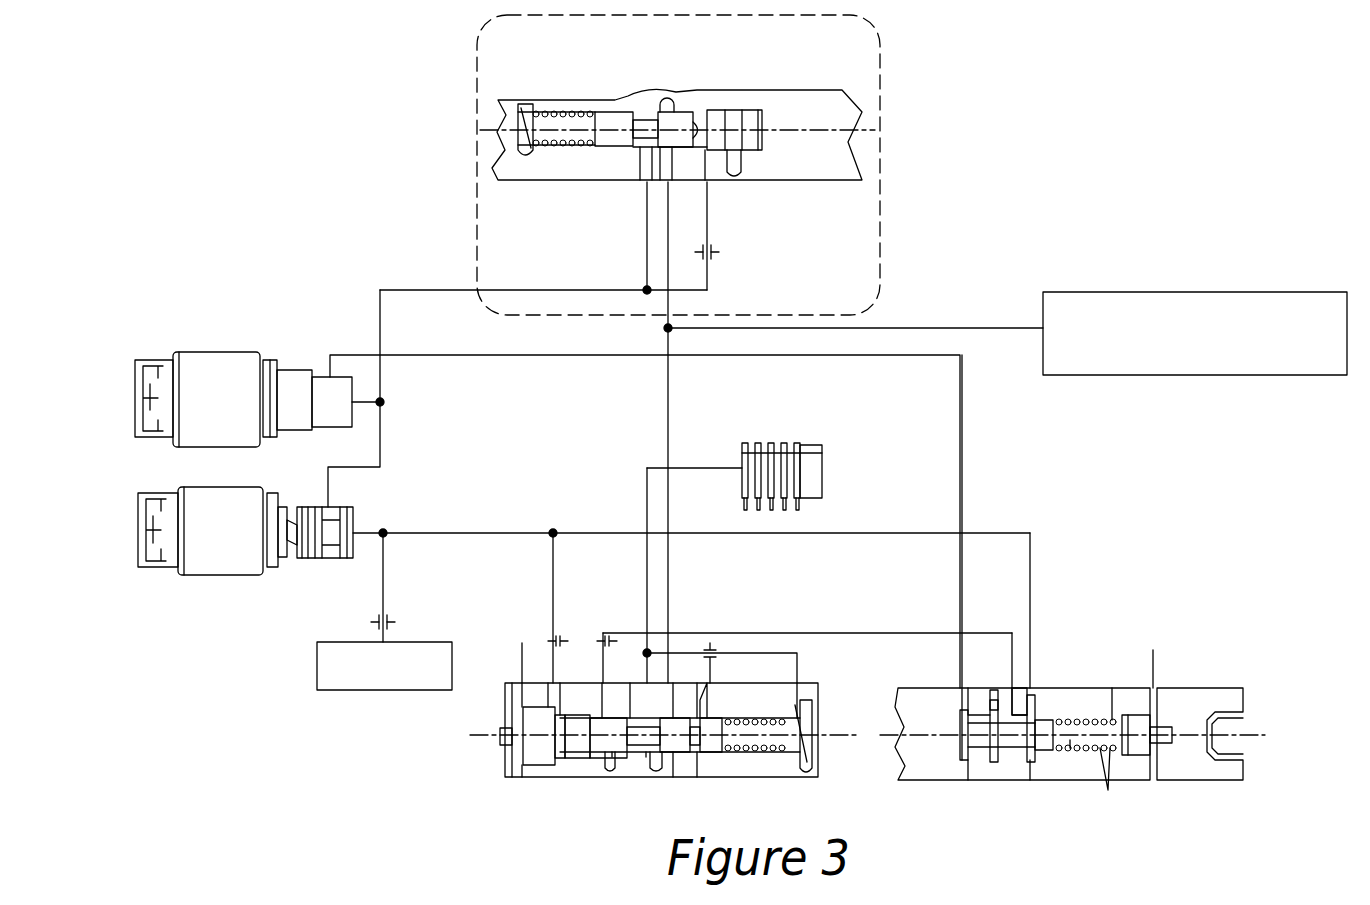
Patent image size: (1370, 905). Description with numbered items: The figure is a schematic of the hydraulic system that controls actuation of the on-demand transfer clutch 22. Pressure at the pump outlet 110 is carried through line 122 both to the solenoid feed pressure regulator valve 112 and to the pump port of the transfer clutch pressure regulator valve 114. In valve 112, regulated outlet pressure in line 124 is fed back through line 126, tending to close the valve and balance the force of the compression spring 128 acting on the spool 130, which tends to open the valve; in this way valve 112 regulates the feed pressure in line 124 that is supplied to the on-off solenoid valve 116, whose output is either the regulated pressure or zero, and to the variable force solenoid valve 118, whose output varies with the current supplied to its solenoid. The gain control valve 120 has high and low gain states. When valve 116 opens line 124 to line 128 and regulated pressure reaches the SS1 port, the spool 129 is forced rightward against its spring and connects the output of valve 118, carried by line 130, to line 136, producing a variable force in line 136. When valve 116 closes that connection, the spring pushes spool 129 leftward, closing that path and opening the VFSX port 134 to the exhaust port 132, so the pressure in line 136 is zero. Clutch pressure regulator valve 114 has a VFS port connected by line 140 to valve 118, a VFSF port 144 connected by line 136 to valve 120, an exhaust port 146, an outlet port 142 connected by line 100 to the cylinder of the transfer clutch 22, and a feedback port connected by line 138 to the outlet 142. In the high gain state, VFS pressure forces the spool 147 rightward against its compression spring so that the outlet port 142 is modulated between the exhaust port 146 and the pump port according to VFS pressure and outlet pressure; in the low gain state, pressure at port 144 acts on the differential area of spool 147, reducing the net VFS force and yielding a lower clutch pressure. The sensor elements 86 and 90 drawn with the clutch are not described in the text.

The on-demand clutch 22 is at (752, 456).
The sensor body 86 is at (771, 443).
The sensor connector pins 90 is at (786, 510).
The line 100 is at (646, 570).
The pump outlet 110 is at (1195, 292).
The solenoid feed pressure regulator valve 112 is at (570, 199).
The transfer clutch pressure regulator valve 114 is at (474, 762).
The on-off solenoid valve 116 is at (226, 348).
The variable force solenoid valve 118 is at (230, 592).
The gain control valve 120 is at (1209, 681).
The line 122 is at (945, 328).
The output line of the regulator valve 124 is at (647, 258).
The feedback line 126 is at (707, 216).
The compression spring / line 128 is at (550, 112).
The spool 129 is at (1070, 742).
The spool / line 130 is at (647, 118).
The exhaust port 132 is at (990, 705).
The VFSX port 134 is at (1015, 695).
The line 136 is at (757, 633).
The line 138 is at (798, 678).
The line 140 is at (552, 590).
The outlet port 142 is at (646, 758).
The VFSF port 144 is at (602, 697).
The exhaust port 146 is at (628, 683).
The spool 147 is at (612, 758).